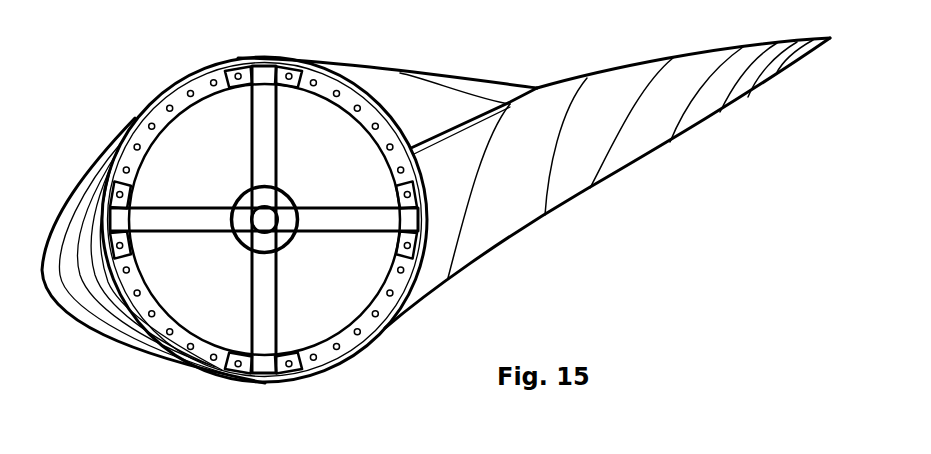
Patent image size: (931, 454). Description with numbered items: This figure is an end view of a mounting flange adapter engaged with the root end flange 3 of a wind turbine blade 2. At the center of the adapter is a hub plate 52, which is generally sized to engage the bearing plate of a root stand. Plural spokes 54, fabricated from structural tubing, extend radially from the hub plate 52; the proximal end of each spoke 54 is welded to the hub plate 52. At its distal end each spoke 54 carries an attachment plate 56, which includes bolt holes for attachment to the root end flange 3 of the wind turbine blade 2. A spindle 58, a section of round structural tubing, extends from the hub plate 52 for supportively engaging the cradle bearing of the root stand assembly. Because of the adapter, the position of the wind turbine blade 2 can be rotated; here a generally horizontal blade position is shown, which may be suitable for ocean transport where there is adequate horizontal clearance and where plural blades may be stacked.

The wind turbine blade 2 is at (562, 202).
The root end flange 3 is at (362, 318).
The hub plate 52 is at (242, 196).
The spokes 54 is at (348, 206).
The attachment plate 56 is at (222, 70).
The spindle 58 is at (280, 225).